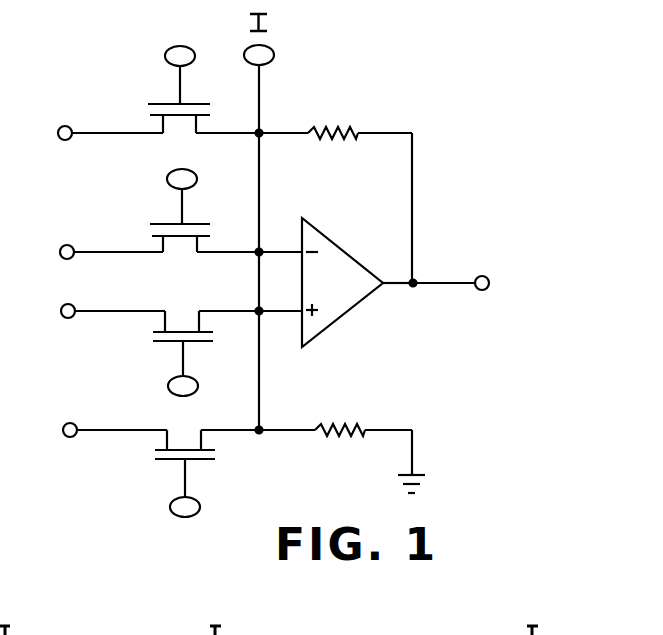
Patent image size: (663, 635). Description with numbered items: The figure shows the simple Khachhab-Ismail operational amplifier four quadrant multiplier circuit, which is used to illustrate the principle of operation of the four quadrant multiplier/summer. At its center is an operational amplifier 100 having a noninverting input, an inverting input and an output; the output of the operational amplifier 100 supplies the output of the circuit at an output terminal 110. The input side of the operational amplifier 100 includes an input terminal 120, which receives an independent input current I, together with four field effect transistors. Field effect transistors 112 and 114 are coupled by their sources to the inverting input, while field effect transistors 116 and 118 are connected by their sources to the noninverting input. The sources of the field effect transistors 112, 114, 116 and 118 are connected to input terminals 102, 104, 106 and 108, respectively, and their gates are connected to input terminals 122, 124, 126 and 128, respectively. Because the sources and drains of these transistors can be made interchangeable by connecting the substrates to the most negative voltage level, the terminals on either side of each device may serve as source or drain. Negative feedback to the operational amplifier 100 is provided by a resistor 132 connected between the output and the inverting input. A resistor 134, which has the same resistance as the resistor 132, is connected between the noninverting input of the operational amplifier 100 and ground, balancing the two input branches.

The operational amplifier 100 is at (357, 272).
The input terminal 102 is at (94, 124).
The input terminal 104 is at (94, 244).
The input terminal 106 is at (95, 305).
The input terminal 108 is at (98, 425).
The output terminal 110 is at (473, 278).
The field effect transistor 112 is at (183, 116).
The field effect transistor 114 is at (205, 220).
The field effect transistor 116 is at (206, 343).
The field effect transistor 118 is at (213, 463).
The input terminal 120 is at (237, 222).
The input terminal 122 is at (156, 39).
The input terminal 124 is at (157, 182).
The input terminal 126 is at (174, 401).
The input terminal 128 is at (178, 520).
The resistor 132 is at (335, 188).
The resistor 134 is at (370, 458).